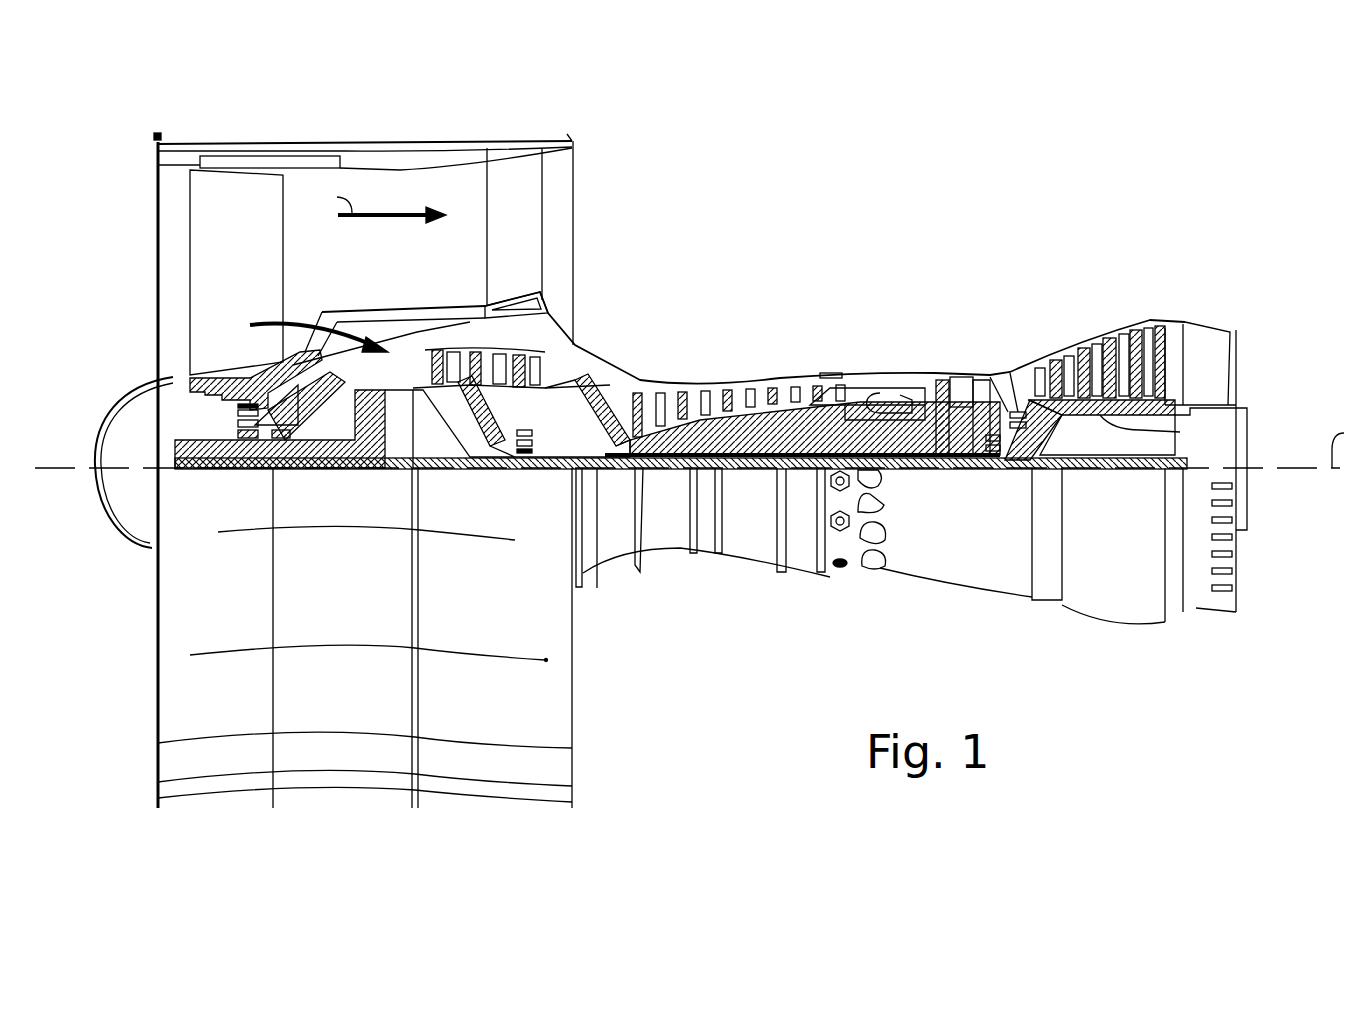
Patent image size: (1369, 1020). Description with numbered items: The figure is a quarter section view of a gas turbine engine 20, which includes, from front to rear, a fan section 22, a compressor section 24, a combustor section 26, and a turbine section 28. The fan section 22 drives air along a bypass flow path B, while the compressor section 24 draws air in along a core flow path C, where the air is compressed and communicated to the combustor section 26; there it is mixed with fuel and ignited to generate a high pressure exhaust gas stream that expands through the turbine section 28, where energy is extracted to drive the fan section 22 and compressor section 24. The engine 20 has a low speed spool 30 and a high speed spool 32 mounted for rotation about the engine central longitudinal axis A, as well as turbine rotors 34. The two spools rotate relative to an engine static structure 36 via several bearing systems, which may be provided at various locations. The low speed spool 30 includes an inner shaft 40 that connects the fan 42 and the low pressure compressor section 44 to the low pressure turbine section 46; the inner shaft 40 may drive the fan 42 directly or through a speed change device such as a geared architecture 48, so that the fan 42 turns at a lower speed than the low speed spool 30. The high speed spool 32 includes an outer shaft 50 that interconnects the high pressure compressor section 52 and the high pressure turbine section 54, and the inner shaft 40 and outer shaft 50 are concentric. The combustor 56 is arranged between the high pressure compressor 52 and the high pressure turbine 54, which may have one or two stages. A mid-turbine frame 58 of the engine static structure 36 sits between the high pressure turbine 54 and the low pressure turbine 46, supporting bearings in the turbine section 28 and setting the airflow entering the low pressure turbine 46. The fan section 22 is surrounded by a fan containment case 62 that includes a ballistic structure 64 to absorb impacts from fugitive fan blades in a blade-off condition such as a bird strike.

The gas turbine engine 20 is at (1012, 132).
The fan section 22 is at (390, 110).
The compressor section 24 is at (815, 248).
The combustor section 26 is at (930, 248).
The turbine section 28 is at (1190, 248).
The low speed spool 30 is at (745, 480).
The high speed spool 32 is at (775, 445).
The turbine rotors 34 is at (1108, 420).
The engine static structure 36 is at (800, 582).
The inner shaft 40 is at (597, 475).
The fan 42 is at (250, 252).
The low pressure compressor section 44 is at (497, 360).
The low pressure turbine section 46 is at (1106, 345).
The geared architecture 48 is at (368, 470).
The outer shaft 50 is at (888, 457).
The high pressure compressor section 52 is at (693, 435).
The high pressure turbine section 54 is at (961, 377).
The combustor 56 is at (878, 395).
The mid-turbine frame 58 is at (1013, 364).
The fan containment case 62 is at (404, 146).
The ballistic structure 64 is at (1201, 322).